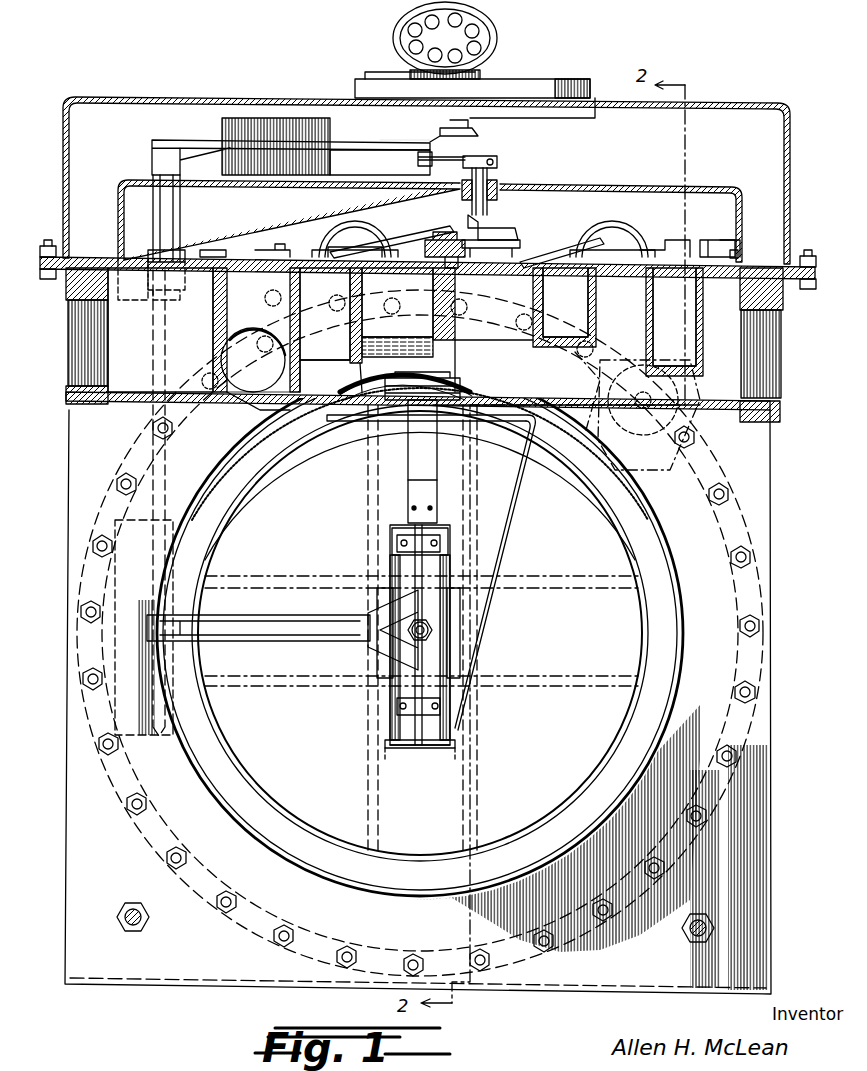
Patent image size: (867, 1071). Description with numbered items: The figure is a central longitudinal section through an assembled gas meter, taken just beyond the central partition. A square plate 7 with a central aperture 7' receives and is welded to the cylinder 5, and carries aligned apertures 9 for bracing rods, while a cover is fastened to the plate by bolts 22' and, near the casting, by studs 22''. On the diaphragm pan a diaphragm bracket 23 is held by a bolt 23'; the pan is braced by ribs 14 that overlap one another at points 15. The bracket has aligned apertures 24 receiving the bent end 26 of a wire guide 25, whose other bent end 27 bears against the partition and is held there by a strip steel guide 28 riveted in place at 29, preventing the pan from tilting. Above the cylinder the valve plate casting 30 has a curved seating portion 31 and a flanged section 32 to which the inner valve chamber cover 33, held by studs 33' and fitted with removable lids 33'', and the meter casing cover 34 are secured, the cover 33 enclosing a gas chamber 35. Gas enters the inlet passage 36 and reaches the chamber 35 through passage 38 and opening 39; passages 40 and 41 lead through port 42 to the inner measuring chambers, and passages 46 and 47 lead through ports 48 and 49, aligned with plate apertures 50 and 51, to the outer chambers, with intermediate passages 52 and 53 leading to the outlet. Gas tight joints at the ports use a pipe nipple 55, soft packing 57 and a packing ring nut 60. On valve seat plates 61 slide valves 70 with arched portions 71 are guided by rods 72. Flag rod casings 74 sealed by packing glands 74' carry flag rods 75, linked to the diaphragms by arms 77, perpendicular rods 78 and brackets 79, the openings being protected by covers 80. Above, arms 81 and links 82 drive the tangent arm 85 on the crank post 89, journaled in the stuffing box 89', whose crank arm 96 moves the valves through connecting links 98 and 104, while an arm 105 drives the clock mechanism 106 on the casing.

The cylinder 5 is at (676, 572).
The plates 7 is at (436, 702).
The central apertures 7' is at (420, 633).
The aligned apertures 9 is at (143, 906).
The ribs 14 is at (370, 626).
The overlapping points 15 is at (366, 500).
The bolts 22' is at (420, 637).
The studs 22'' is at (325, 314).
The diaphragm bracket 23 is at (418, 658).
The bolt 23' is at (454, 630).
The aligned apertures 24 is at (460, 744).
The wire guide 25 is at (500, 552).
The bent end 26 is at (418, 770).
The bent end section 27 is at (330, 430).
The strip steel guide 28 is at (440, 470).
The rivet 29 is at (435, 508).
The valve plate casting 30 is at (778, 416).
The curved seating portion 31 is at (545, 410).
The cover securing flanged section 32 is at (74, 258).
The inner valve chamber cover 33 is at (438, 211).
The studs 33' is at (748, 243).
The removable lids 33'' is at (484, 153).
The meter casing cover 34 is at (722, 100).
The gas chamber 35 is at (233, 229).
The inlet gas passage 36 is at (68, 366).
The passage 38 is at (160, 330).
The opening 39 is at (132, 266).
The passage 40 is at (395, 238).
The passage 41 is at (548, 254).
The port 42 is at (458, 385).
The passage 46 is at (262, 300).
The passage 47 is at (702, 240).
The port 48 is at (240, 410).
The port 49 is at (637, 411).
The aperture 50 is at (284, 430).
The aperture 51 is at (698, 440).
The passage 52 is at (396, 346).
The passage 53 is at (586, 302).
The pipe nipple 55 is at (455, 372).
The packing material 57 is at (781, 356).
The packing ring nut 60 is at (365, 414).
The valve seat plate 61 is at (336, 308).
The slide valve 70 is at (362, 230).
The arched central portion 71 is at (330, 228).
The guide rods 72 is at (442, 236).
The flag rod casings 74 is at (183, 218).
The packing glands 74' is at (194, 267).
The flag rod 75 is at (168, 608).
The arms 77 is at (270, 636).
The perpendicular rods 78 is at (392, 570).
The brackets 79 is at (346, 708).
The covers 80 is at (112, 574).
The arms 81 is at (188, 142).
The links 82 is at (360, 148).
The tangent arm 85 is at (450, 162).
The crank post 89 is at (501, 191).
The bearing and stuffing box structure 89' is at (504, 163).
The crank arm 96 is at (515, 222).
The connecting link 98 is at (355, 243).
The connecting link 104 is at (522, 244).
The arm 105 is at (478, 132).
The meter clock mechanism 106 is at (495, 58).